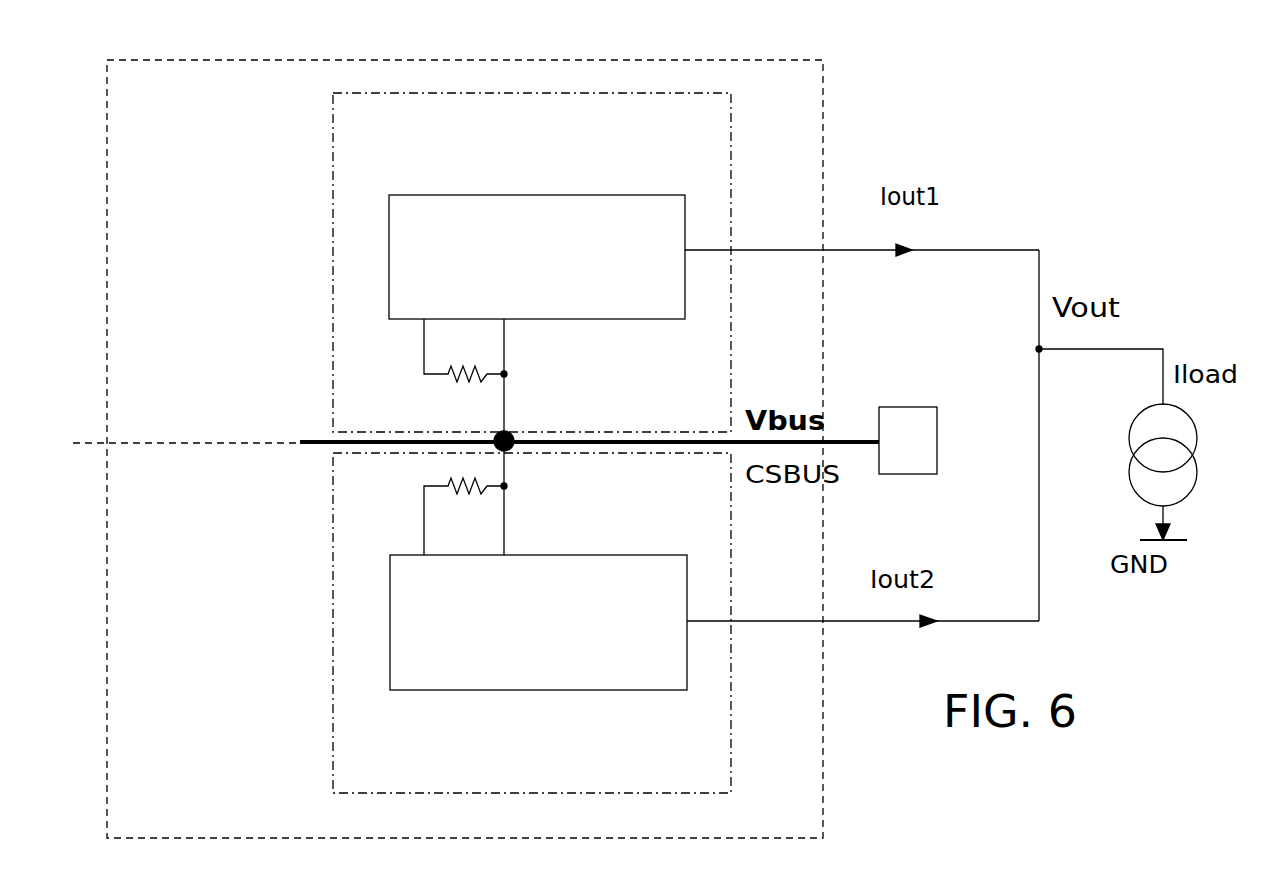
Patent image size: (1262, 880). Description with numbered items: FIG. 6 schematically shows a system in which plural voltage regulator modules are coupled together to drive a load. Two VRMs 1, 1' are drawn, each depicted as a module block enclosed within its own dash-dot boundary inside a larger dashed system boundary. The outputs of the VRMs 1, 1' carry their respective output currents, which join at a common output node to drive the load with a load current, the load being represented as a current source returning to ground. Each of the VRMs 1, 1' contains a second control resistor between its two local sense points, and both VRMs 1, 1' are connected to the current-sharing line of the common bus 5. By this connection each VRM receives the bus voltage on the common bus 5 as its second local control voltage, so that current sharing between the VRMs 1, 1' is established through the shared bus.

The VRM 1 is at (469, 267).
The VRM 1' is at (469, 617).
The common or current-sharing bus 5 is at (913, 427).